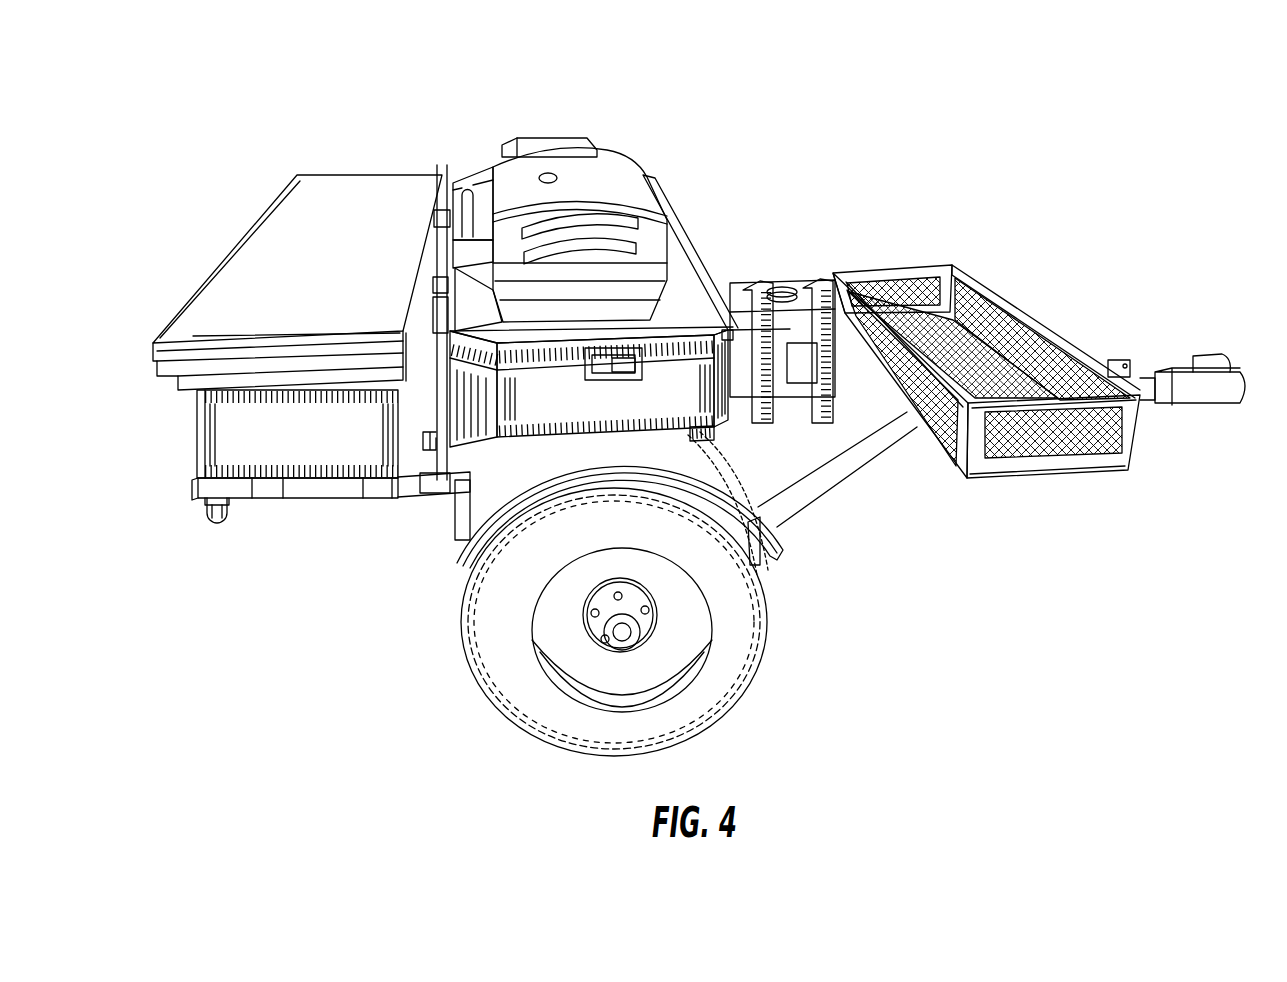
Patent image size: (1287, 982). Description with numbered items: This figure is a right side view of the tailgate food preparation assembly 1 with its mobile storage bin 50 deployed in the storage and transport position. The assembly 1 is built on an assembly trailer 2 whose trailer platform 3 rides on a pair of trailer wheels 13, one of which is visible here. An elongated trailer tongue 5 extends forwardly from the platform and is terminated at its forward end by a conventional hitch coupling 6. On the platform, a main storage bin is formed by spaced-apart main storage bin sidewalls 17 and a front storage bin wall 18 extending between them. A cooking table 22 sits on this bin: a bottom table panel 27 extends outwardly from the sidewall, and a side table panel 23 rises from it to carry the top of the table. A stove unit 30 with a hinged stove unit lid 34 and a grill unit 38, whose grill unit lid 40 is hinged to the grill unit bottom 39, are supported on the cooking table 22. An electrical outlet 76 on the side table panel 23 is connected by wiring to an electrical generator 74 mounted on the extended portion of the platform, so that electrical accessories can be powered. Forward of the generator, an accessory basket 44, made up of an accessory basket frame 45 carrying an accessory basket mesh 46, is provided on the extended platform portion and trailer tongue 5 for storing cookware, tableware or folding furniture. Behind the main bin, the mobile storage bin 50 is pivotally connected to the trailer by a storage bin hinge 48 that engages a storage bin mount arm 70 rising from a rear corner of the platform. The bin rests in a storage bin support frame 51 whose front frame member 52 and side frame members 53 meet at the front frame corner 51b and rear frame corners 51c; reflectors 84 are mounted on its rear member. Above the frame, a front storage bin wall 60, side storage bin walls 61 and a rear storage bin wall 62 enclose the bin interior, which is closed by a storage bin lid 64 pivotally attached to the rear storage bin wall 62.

The tailgate food preparation assembly 1 is at (232, 105).
The assembly trailer 2 is at (700, 212).
The trailer platform 3 is at (862, 470).
The trailer tongue 5 is at (1160, 368).
The hitch coupling 6 is at (1207, 390).
The trailer wheels 13 is at (725, 672).
The main storage bin sidewalls 17 is at (440, 470).
The front storage bin wall 18 is at (779, 430).
The cooking table 22 is at (750, 592).
The side table panels 23 is at (673, 400).
The bottom table panels 27 is at (592, 432).
The stove unit 30 is at (545, 128).
The hinged stove unit lid 34 is at (517, 140).
The grill unit 38 is at (622, 147).
The grill unit bottom 39 is at (620, 302).
The grill unit lid 40 is at (612, 180).
The accessory basket 44 is at (1055, 482).
The accessory basket frame 45 is at (1108, 465).
The accessory basket mesh 46 is at (1012, 328).
The storage bin hinge 48 is at (426, 276).
The mobile storage bin 50 is at (240, 215).
The storage bin support frame 51 is at (305, 503).
The front frame corner 51b is at (400, 497).
The rear frame corners 51c is at (203, 498).
The front frame member 52 is at (420, 378).
The side frame members 53 is at (240, 487).
The front storage bin wall 60 is at (423, 327).
The side storage bin walls 61 is at (237, 432).
The rear storage bin wall 62 is at (197, 407).
The storage bin lid 64 is at (373, 193).
The storage bin mount arm 70 is at (443, 192).
The electrical generator 74 is at (795, 288).
The electrical outlet 76 is at (670, 440).
The reflectors 84 is at (207, 508).